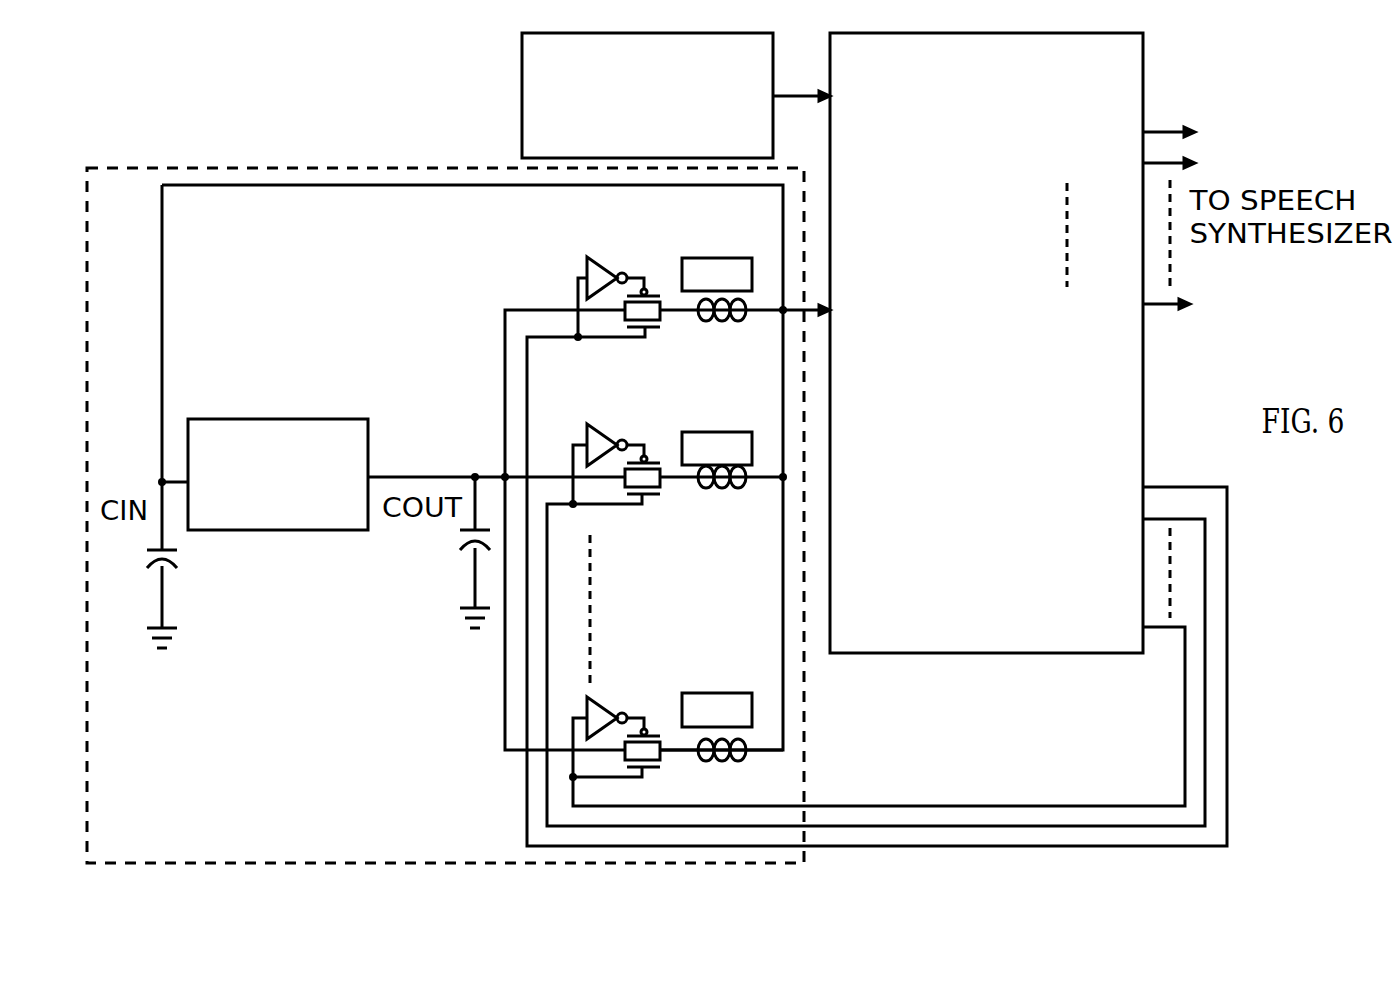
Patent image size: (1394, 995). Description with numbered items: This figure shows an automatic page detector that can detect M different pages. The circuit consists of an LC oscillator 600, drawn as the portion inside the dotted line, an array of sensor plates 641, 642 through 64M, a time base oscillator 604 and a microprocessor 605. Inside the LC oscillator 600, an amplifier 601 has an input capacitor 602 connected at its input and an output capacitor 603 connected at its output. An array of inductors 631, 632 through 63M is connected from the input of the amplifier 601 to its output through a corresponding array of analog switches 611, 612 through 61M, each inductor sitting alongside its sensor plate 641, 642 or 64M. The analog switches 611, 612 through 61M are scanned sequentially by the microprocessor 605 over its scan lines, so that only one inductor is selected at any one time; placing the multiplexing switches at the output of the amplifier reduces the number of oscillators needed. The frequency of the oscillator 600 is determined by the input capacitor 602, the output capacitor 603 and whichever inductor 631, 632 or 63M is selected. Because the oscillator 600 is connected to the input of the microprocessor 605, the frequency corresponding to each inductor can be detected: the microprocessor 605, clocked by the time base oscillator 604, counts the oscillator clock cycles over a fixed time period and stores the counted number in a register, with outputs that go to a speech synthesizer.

The LC oscillator 600 is at (158, 158).
The amplifier 601 is at (293, 419).
The input capacitor 602 is at (188, 567).
The output capacitor 603 is at (438, 550).
The time base oscillator 604 is at (533, 85).
The microprocessor 605 is at (1122, 102).
The analog switch 611 is at (653, 340).
The analog switch 612 is at (664, 493).
The analog switch 61M is at (647, 720).
The inductor 631 is at (658, 339).
The inductor 632 is at (740, 490).
The inductor 63M is at (730, 760).
The sensor plate 641 is at (720, 253).
The sensor plate 642 is at (718, 340).
The sensor plate 64M is at (727, 689).